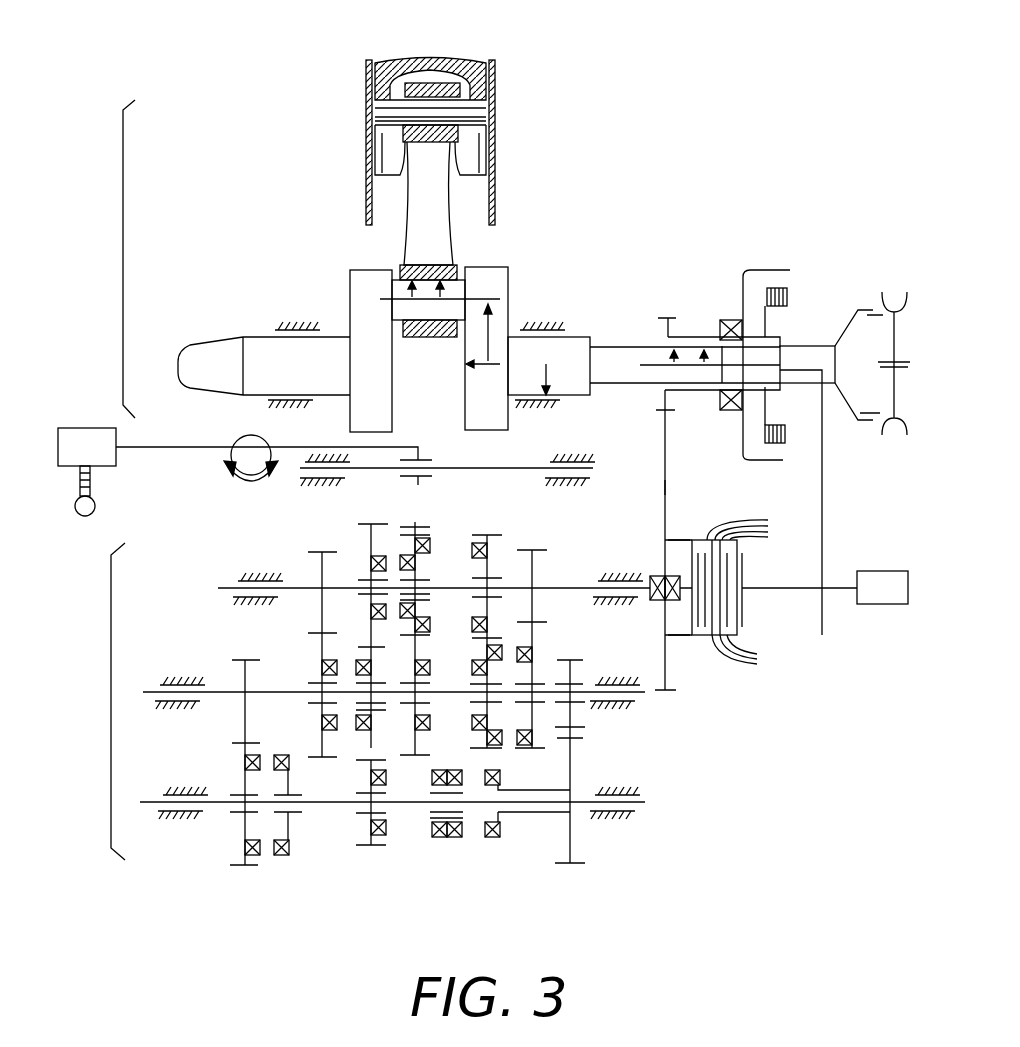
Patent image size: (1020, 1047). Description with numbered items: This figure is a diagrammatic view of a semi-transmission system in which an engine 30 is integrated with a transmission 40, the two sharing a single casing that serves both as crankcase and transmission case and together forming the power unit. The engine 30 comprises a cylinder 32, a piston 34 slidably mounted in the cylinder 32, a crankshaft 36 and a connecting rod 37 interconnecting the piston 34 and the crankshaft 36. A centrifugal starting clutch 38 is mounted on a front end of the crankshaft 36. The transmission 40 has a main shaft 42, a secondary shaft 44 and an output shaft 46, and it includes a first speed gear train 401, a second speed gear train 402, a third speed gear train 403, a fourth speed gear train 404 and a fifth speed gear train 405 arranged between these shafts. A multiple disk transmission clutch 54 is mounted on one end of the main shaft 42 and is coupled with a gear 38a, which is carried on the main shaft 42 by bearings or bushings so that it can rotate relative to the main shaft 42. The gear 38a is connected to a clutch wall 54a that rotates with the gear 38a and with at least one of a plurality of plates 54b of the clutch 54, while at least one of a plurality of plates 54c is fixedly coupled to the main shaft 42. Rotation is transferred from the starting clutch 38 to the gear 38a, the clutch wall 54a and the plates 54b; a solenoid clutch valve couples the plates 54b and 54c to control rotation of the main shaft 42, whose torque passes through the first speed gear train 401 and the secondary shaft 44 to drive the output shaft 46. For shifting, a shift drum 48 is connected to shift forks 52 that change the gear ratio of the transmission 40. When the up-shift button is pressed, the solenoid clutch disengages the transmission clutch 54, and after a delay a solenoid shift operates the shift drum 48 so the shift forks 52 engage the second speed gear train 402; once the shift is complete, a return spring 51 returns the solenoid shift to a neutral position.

The engine 30 is at (123, 266).
The cylinder 32 is at (495, 208).
The piston 34 is at (468, 58).
The crankshaft 36 is at (516, 280).
The connecting rod 37 is at (412, 247).
The centrifugal starting clutch 38 is at (762, 270).
The gear 38a is at (668, 487).
The transmission 40 is at (111, 720).
The first speed gear train 401 is at (539, 630).
The second speed gear train 402 is at (322, 635).
The third speed gear train 403 is at (430, 660).
The fourth speed gear train 404 is at (517, 665).
The fifth speed gear train 405 is at (372, 664).
The main shaft 42 is at (580, 585).
The secondary shaft 44 is at (583, 692).
The output shaft 46 is at (575, 802).
The shift drum 48 is at (240, 441).
The return spring 51 is at (92, 505).
The shift forks 52 is at (425, 480).
The multiple disk transmission clutch 54 is at (745, 572).
The clutch wall 54a is at (683, 540).
The plates 54b is at (763, 530).
The plates 54c is at (759, 659).